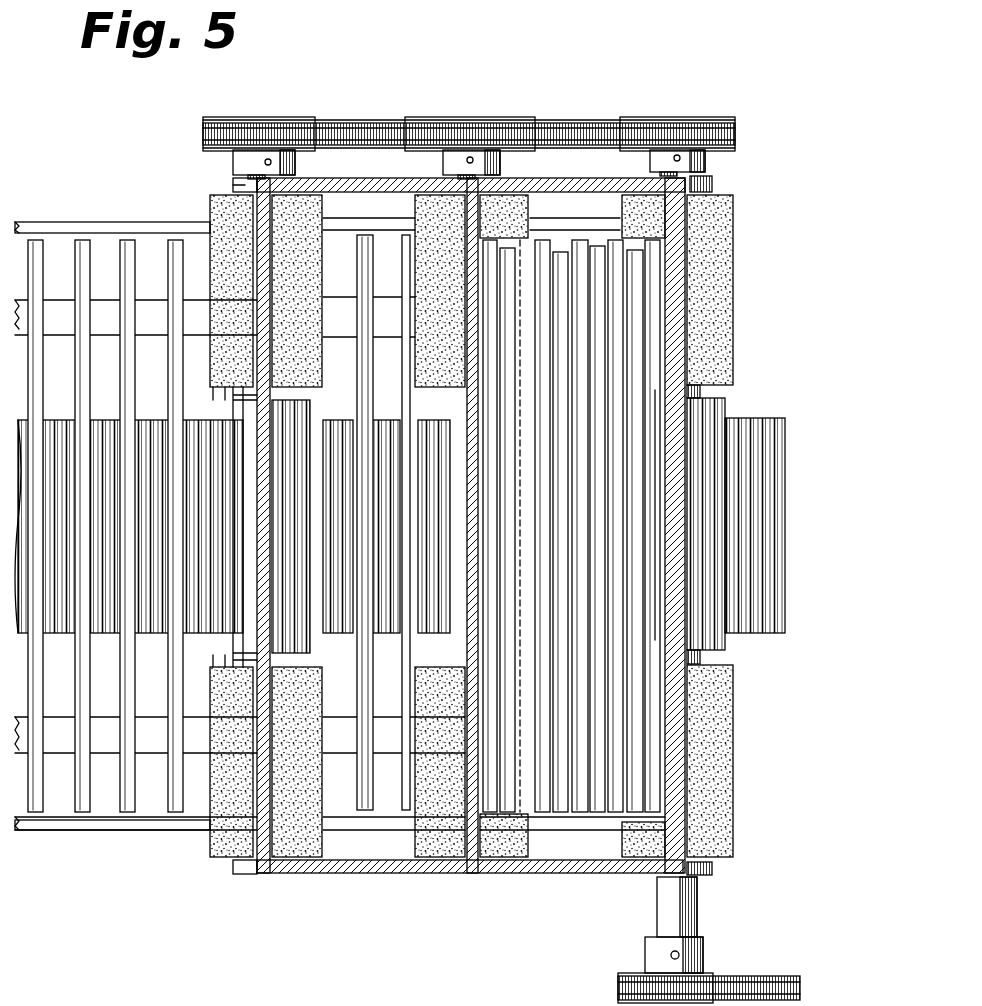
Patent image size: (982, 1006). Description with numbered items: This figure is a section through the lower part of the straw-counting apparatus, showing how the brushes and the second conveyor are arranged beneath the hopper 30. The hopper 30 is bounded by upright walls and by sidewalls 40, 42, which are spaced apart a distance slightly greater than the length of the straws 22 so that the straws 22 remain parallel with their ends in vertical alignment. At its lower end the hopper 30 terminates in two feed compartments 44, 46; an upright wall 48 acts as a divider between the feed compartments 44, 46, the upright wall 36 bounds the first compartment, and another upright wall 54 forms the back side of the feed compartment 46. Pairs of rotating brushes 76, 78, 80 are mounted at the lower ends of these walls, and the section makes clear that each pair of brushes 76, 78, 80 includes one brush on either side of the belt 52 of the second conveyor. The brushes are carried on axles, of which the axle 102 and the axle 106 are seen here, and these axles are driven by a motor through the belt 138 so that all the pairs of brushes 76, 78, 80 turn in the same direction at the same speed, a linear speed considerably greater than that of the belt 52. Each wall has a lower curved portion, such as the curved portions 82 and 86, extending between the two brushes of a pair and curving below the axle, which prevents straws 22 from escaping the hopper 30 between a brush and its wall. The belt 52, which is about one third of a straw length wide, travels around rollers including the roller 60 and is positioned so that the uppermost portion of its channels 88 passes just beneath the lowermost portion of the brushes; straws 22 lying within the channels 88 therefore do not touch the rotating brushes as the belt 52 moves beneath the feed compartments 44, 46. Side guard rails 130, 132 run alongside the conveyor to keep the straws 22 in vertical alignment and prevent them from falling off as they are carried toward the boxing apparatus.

The straws 22 is at (125, 815).
The hopper 30 is at (350, 168).
The upright wall 36 is at (258, 855).
The sidewall 40 is at (395, 875).
The sidewall 42 is at (508, 185).
The feed compartment 44 is at (413, 207).
The feed compartment 46 is at (612, 212).
The upright wall 48 is at (470, 810).
The belt 52 is at (100, 425).
The upright wall 54 is at (680, 785).
The roller 60 is at (690, 905).
The pair of rotating brushes 76 is at (300, 245).
The pair of rotating brushes 78 is at (530, 205).
The pair of rotating brushes 80 is at (735, 200).
The lower curved portion 82 is at (297, 607).
The lower curved portion 86 is at (710, 650).
The channels 88 is at (785, 490).
The axle 102 is at (210, 258).
The axle 106 is at (700, 172).
The side guard rail 130 is at (120, 830).
The side guard rail 132 is at (95, 222).
The belt 138 is at (378, 128).